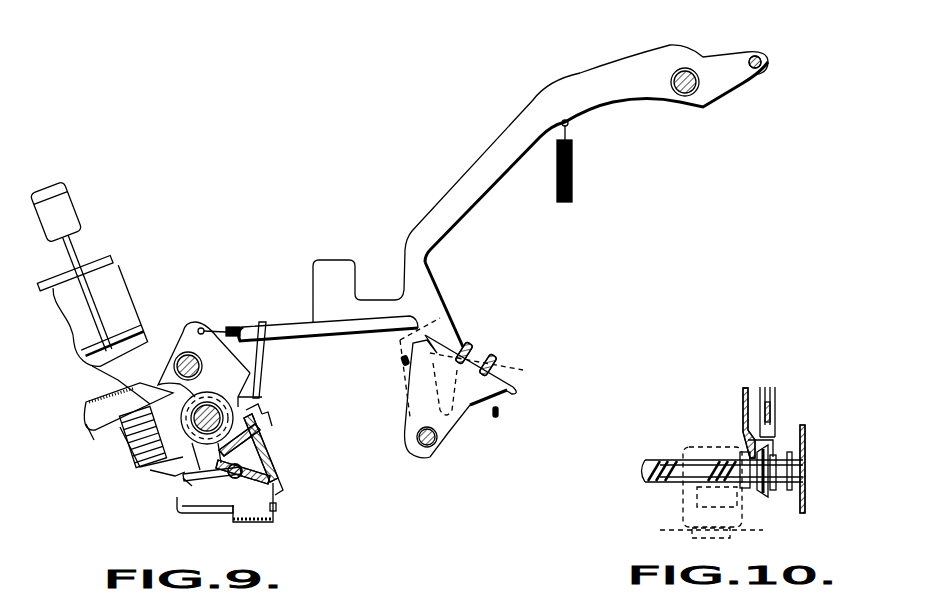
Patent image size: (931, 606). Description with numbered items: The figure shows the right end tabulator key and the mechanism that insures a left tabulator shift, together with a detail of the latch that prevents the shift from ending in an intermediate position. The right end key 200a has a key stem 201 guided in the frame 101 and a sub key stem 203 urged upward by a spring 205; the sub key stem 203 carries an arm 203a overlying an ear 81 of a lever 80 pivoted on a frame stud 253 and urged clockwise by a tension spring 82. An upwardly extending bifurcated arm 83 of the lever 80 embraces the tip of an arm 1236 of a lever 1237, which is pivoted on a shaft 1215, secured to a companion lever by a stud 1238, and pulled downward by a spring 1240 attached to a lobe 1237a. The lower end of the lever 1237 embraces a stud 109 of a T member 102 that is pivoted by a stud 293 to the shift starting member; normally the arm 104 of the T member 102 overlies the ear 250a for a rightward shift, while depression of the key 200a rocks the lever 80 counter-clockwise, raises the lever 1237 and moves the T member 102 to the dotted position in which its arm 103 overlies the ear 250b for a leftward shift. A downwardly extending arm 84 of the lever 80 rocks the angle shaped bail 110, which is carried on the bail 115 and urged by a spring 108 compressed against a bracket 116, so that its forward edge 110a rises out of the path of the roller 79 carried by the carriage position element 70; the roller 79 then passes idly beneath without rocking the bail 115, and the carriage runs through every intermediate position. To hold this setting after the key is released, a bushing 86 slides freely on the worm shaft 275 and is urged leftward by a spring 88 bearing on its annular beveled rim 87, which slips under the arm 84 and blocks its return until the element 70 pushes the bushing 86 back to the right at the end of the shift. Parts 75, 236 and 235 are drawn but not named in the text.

In FIG. 9, the right end key 200a is at (70, 206).
In FIG. 9, the frame 101 is at (44, 286).
In FIG. 9, the key stem 201 is at (97, 288).
In FIG. 9, the frame stud 253 is at (184, 349).
In FIG. 9, the sub key stem 203 is at (100, 385).
In FIG. 9, the arm 203a is at (86, 417).
In FIG. 9, the ear 81 is at (92, 437).
In FIG. 9, the spring 205 is at (130, 458).
In FIG. 9, the lever 80 is at (200, 310).
In FIG. 10, the lever 80 is at (742, 403).
In FIG. 9, the annular beveled rim 87 is at (177, 371).
In FIG. 10, the annular beveled rim 87 is at (768, 497).
In FIG. 9, the bushing 86 is at (226, 371).
In FIG. 10, the bushing 86 is at (745, 490).
In FIG. 9, the tension spring 82 is at (230, 326).
In FIG. 9, the bifurcated arm 83 is at (264, 356).
In FIG. 10, the bifurcated arm 83 is at (774, 428).
In FIG. 9, the downwardly extending arm 84 is at (250, 398).
In FIG. 10, the downwardly extending arm 84 is at (747, 445).
In FIG. 9, the arm 1236 is at (281, 328).
In FIG. 10, the arm 1236 is at (770, 418).
In FIG. 9, the lever 1237 is at (409, 238).
In FIG. 9, the stud 1238 is at (755, 55).
In FIG. 9, the shaft 1215 is at (688, 96).
In FIG. 9, the lobe 1237a is at (573, 122).
In FIG. 9, the spring 1240 is at (575, 172).
In FIG. 9, the arm 103 is at (438, 330).
In FIG. 9, the T member 102 is at (534, 343).
In FIG. 9, the stud 109 is at (510, 373).
In FIG. 9, the arm 104 is at (518, 394).
In FIG. 9, the ear 250b is at (397, 362).
In FIG. 9, the ear 250a is at (497, 417).
In FIG. 9, the stud 293 is at (423, 443).
In FIG. 9, the spring 108 is at (263, 414).
In FIG. 9, the bracket 116 is at (262, 432).
In FIG. 9, the angle shaped bail 110 is at (274, 458).
In FIG. 9, the forward edge 110a is at (280, 474).
In FIG. 9, the carriage position element 70 is at (212, 477).
In FIG. 10, the carriage position element 70 is at (670, 492).
In FIG. 9, the roller 79 is at (173, 473).
In FIG. 9, the pin 75 is at (193, 475).
In FIG. 9, the bracket 236 is at (215, 510).
In FIG. 9, the bail 115 is at (252, 522).
In FIG. 9, the support 235 is at (275, 520).
In FIG. 10, the worm shaft 275 is at (643, 473).
In FIG. 10, the spring 88 is at (803, 462).